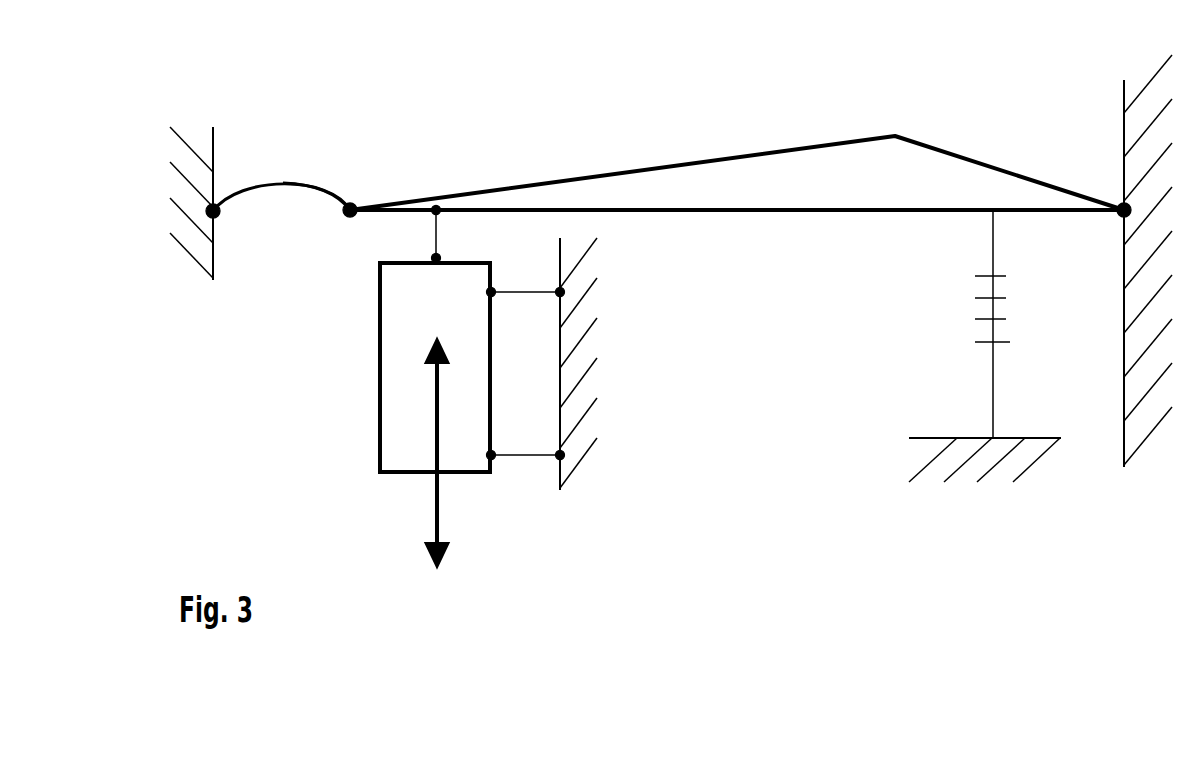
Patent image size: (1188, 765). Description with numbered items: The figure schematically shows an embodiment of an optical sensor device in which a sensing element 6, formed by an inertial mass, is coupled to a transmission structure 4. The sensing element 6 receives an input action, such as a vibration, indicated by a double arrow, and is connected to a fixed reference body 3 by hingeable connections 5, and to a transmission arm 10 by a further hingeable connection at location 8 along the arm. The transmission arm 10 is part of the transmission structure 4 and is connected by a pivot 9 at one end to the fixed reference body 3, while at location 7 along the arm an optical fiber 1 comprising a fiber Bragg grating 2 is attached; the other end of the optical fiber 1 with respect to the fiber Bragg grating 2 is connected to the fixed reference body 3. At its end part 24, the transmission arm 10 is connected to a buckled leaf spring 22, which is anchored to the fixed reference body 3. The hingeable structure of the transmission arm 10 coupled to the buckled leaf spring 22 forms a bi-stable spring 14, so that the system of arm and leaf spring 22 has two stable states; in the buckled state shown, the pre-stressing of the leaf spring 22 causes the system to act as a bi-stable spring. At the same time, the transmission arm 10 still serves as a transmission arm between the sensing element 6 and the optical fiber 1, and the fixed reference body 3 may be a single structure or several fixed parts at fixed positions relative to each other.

The optical fiber 1 is at (990, 250).
The fiber bragg grating 2 is at (968, 313).
The fixed reference body 3 is at (208, 313).
The transmission structure 4 is at (818, 213).
The hingeable connection 5 is at (532, 296).
The sensing element 6 is at (382, 328).
The location 7 is at (1002, 217).
The location 8 is at (448, 214).
The pivot 9 is at (1118, 198).
The transmission arm 10 is at (768, 150).
The bi-stable spring 14 is at (285, 197).
The buckled leaf spring 22 is at (315, 182).
The end part 24 is at (368, 200).